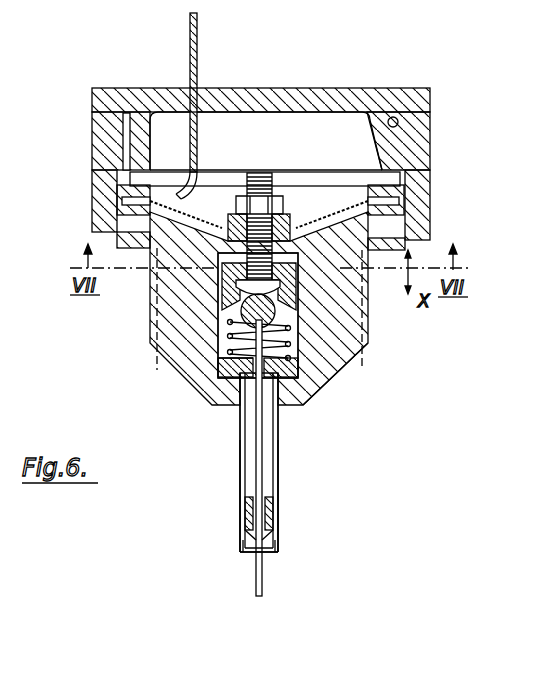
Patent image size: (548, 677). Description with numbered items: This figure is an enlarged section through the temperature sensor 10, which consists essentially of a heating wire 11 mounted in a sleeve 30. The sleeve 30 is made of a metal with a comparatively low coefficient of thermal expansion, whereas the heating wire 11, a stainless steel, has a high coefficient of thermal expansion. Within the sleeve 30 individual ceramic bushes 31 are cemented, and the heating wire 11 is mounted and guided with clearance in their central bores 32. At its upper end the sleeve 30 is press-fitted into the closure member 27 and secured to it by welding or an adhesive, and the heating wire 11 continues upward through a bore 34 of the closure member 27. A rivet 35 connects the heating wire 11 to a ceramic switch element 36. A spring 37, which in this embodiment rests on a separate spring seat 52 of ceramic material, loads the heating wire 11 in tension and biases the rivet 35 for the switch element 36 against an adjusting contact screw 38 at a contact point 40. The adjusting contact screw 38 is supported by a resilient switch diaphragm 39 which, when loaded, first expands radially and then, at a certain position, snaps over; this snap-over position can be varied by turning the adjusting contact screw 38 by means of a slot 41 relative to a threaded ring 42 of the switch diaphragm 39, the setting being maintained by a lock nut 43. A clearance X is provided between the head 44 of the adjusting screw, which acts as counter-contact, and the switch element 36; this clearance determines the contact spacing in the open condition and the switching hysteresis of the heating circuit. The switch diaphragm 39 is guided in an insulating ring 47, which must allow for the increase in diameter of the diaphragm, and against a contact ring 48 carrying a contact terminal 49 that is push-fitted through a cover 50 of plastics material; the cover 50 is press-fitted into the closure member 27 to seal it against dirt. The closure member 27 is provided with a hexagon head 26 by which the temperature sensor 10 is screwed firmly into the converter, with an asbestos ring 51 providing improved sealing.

The temperature sensor 10 is at (280, 462).
The heating wire 11 is at (257, 442).
The hexagon head 26 is at (430, 158).
The closure member 27 is at (195, 345).
The sleeve 30 is at (240, 480).
The ceramic bushes 31 is at (242, 523).
The central bores 32 is at (278, 538).
The bore 34 is at (277, 405).
The rivet 35 is at (218, 372).
The switch element 36 is at (217, 333).
The spring 37 is at (268, 377).
The adjusting contact screw 38 is at (160, 262).
The switch diaphragm 39 is at (233, 200).
The contact point 40 is at (298, 342).
The slot 41 is at (259, 173).
The threaded ring 42 is at (292, 212).
The lock nut 43 is at (275, 200).
The head 44 is at (217, 285).
The insulating ring 47 is at (120, 196).
The contact ring 48 is at (180, 188).
The contact terminal 49 is at (190, 60).
The cover 50 is at (385, 88).
The asbestos ring 51 is at (383, 252).
The spring seat 52 is at (228, 378).